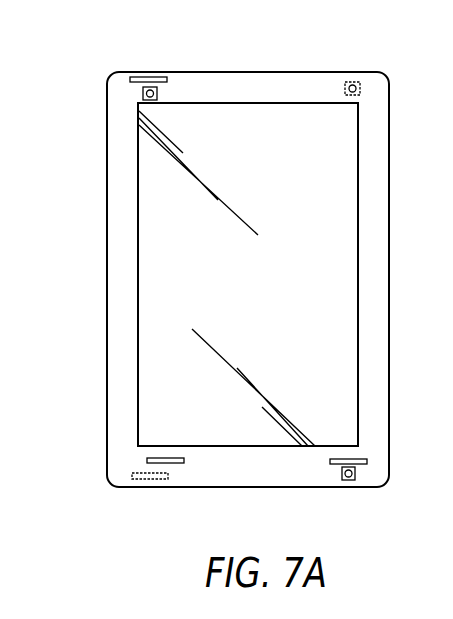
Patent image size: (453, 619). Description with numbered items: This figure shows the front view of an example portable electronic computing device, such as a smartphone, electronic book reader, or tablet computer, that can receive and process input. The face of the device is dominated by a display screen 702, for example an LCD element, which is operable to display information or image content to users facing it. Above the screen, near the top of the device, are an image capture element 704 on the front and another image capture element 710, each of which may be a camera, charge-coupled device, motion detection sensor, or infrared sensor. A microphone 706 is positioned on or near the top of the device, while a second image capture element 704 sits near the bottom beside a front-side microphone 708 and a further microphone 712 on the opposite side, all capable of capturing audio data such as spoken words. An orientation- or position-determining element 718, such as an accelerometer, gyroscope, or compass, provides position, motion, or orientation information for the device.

The display screen 702 is at (138, 173).
The image capture element 704 is at (143, 94).
The microphone 706 is at (167, 80).
The microphone 708 is at (367, 461).
The image capture element 710 is at (353, 82).
The microphone 712 is at (147, 461).
The orientation- or position-determining element 718 is at (150, 479).